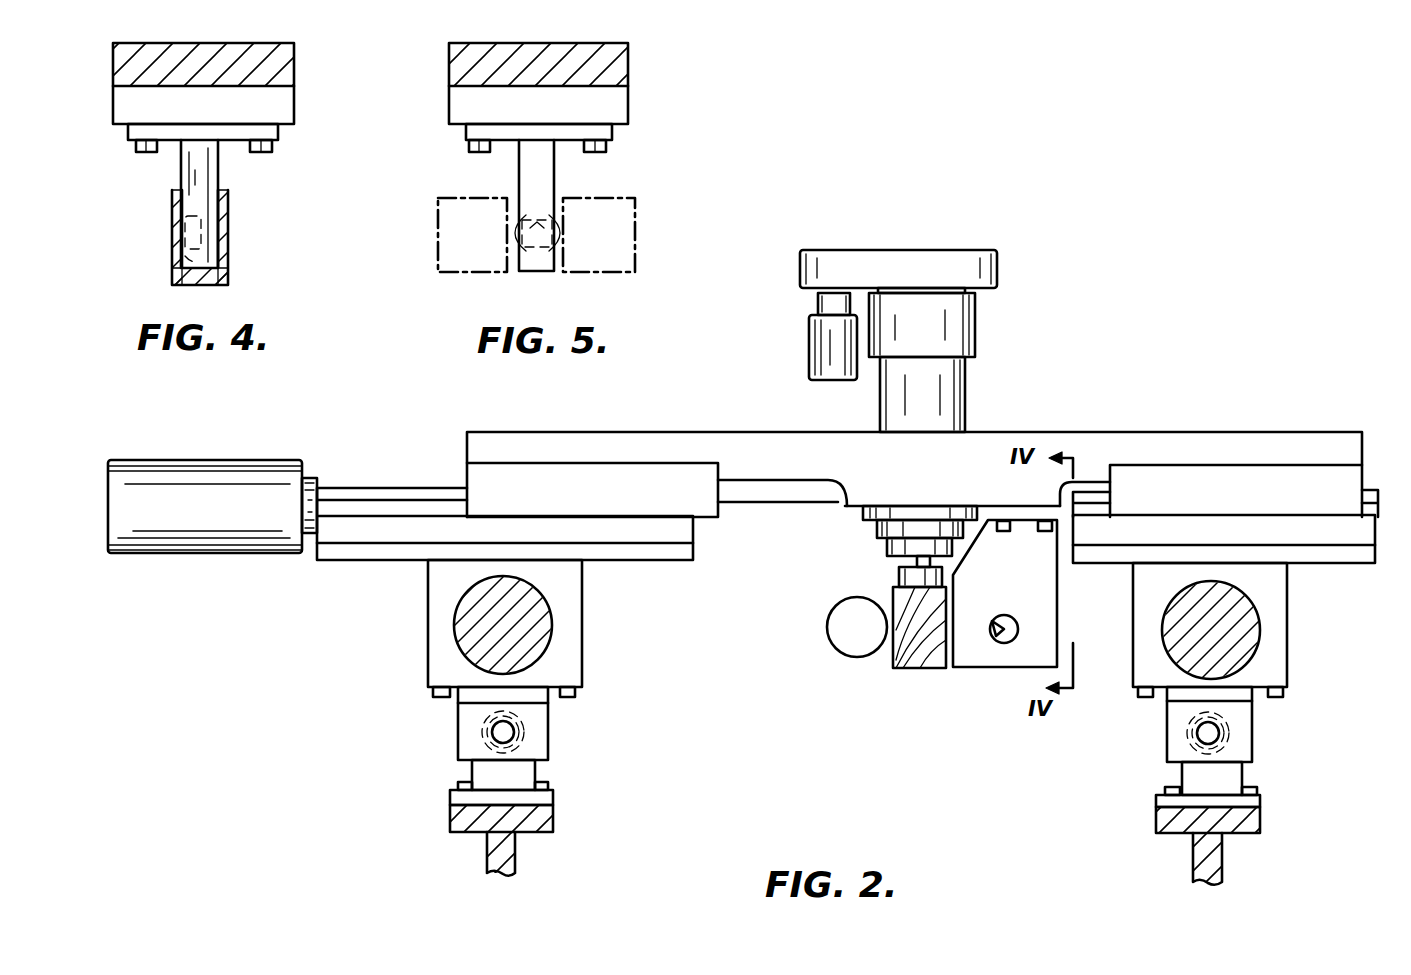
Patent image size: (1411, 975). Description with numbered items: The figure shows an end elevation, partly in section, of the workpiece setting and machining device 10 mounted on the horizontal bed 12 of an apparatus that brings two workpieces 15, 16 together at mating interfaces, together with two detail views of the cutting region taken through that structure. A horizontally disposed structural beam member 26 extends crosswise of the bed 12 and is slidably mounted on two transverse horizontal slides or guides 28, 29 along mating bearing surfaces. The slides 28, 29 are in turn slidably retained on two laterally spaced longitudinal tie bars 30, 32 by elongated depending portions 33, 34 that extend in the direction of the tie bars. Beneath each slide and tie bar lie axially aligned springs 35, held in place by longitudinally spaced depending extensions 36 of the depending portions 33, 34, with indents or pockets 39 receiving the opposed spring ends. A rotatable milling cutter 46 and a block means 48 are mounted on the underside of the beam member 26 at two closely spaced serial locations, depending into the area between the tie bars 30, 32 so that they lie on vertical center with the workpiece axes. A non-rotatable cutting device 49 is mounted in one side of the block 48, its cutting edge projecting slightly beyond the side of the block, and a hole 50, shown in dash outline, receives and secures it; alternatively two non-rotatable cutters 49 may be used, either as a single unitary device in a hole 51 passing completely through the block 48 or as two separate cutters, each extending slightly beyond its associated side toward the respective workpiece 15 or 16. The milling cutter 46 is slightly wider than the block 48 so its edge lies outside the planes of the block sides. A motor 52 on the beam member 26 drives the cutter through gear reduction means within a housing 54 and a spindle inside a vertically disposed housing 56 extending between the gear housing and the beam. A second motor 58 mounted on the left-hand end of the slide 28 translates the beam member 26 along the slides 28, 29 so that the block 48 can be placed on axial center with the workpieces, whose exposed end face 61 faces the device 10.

In FIG. 2, the workpiece setting and machining device 10 is at (1024, 594).
In FIG. 2, the horizontal bed 12 is at (450, 812).
In FIG. 5, the workpiece 15 is at (453, 271).
In FIG. 5, the workpiece 16 is at (628, 272).
In FIG. 2, the workpiece 16 is at (826, 633).
In FIG. 4, the structural beam member 26 is at (236, 43).
In FIG. 5, the structural beam member 26 is at (585, 45).
In FIG. 2, the structural beam member 26 is at (1157, 430).
In FIG. 2, the slide or guide 28 is at (383, 497).
In FIG. 2, the slide or guide 29 is at (1332, 527).
In FIG. 2, the tie bar 30 is at (478, 651).
In FIG. 2, the tie bar 32 is at (1243, 648).
In FIG. 2, the depending portion 33 is at (435, 630).
In FIG. 2, the depending portion 34 is at (1283, 622).
In FIG. 2, the spring 35 is at (520, 746).
In FIG. 2, the depending extension 36 is at (458, 730).
In FIG. 2, the indent or pocket 39 is at (523, 723).
In FIG. 4, the rotatable milling cutter 46 is at (228, 247).
In FIG. 2, the rotatable milling cutter 46 is at (921, 668).
In FIG. 4, the block means 48 is at (218, 165).
In FIG. 5, the block means 48 is at (556, 175).
In FIG. 2, the block means 48 is at (1052, 622).
In FIG. 4, the non-rotatable cutting device 49 is at (177, 234).
In FIG. 5, the non-rotatable cutting device 49 is at (512, 233).
In FIG. 2, the non-rotatable cutting device 49 is at (897, 577).
In FIG. 4, the hole 50 is at (186, 258).
In FIG. 5, the hole 51 is at (538, 221).
In FIG. 2, the motor 52 is at (812, 346).
In FIG. 2, the housing 54 is at (955, 248).
In FIG. 2, the vertically disposed housing 56 is at (966, 393).
In FIG. 2, the second motor 58 is at (207, 545).
In FIG. 2, the exposed face 61 is at (853, 637).